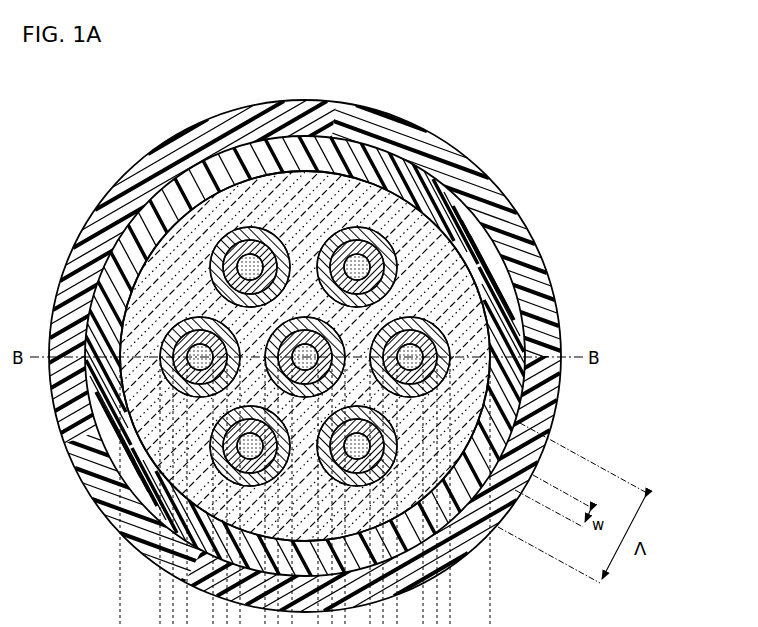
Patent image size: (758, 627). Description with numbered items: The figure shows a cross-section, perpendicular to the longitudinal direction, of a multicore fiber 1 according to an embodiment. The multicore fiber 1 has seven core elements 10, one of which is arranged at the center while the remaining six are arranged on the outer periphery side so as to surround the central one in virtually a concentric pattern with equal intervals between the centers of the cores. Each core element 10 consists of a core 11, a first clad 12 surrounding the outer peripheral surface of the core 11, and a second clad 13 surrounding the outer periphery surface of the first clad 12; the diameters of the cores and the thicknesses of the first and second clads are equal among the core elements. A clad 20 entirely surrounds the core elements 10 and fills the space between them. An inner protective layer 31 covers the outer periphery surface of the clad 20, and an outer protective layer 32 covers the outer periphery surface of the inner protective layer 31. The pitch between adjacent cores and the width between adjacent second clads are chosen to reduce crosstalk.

The multicore fiber 1 is at (566, 93).
The core element 10 is at (445, 212).
The core 11 is at (248, 263).
The first clad 12 is at (272, 246).
The second clad 13 is at (290, 250).
The clad 20 is at (397, 238).
The inner protective layer 31 is at (503, 315).
The outer protective layer 32 is at (514, 252).